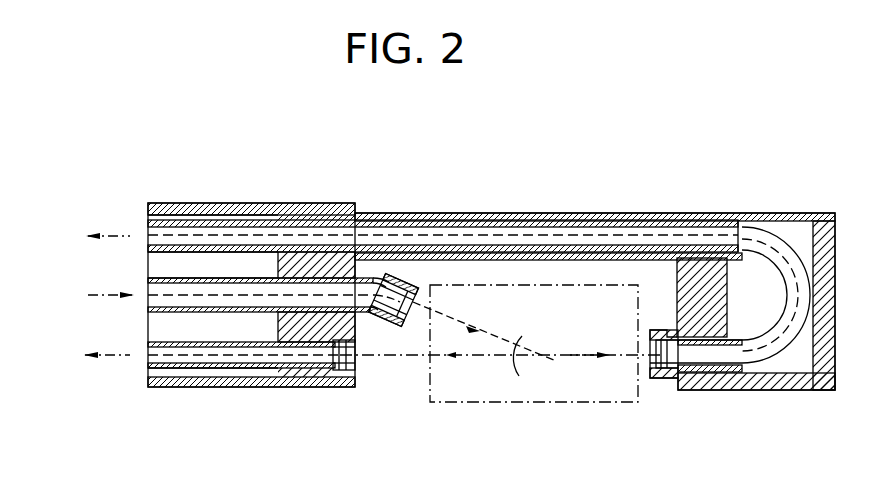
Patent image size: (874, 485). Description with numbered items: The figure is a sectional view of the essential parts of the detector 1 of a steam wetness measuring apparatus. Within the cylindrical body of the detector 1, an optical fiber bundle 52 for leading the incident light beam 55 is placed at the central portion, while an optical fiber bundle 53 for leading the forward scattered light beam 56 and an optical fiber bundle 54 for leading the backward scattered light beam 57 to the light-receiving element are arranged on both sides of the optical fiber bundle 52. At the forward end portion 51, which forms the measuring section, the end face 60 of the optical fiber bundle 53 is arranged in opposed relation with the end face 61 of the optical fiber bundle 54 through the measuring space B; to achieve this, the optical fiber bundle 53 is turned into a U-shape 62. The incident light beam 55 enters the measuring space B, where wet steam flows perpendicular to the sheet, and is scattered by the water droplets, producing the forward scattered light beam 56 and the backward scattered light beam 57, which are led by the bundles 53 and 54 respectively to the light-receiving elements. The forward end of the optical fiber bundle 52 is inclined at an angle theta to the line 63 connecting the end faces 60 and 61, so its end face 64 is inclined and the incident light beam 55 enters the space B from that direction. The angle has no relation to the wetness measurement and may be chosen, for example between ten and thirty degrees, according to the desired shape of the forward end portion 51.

The detector 1 is at (218, 203).
The forward end portion 51 is at (497, 212).
The optical fiber bundle 52 is at (198, 292).
The optical fiber bundle 53 is at (412, 232).
The optical fiber bundle 54 is at (205, 352).
The incident light beam 55 is at (112, 293).
The forward scattered light beam 56 is at (112, 234).
The backward scattered light beam 57 is at (110, 353).
The end face 60 is at (650, 370).
The end face 61 is at (355, 363).
The U-shape 62 is at (795, 292).
The line 63 is at (452, 355).
The end face 64 is at (418, 298).
The measuring space B is at (530, 402).